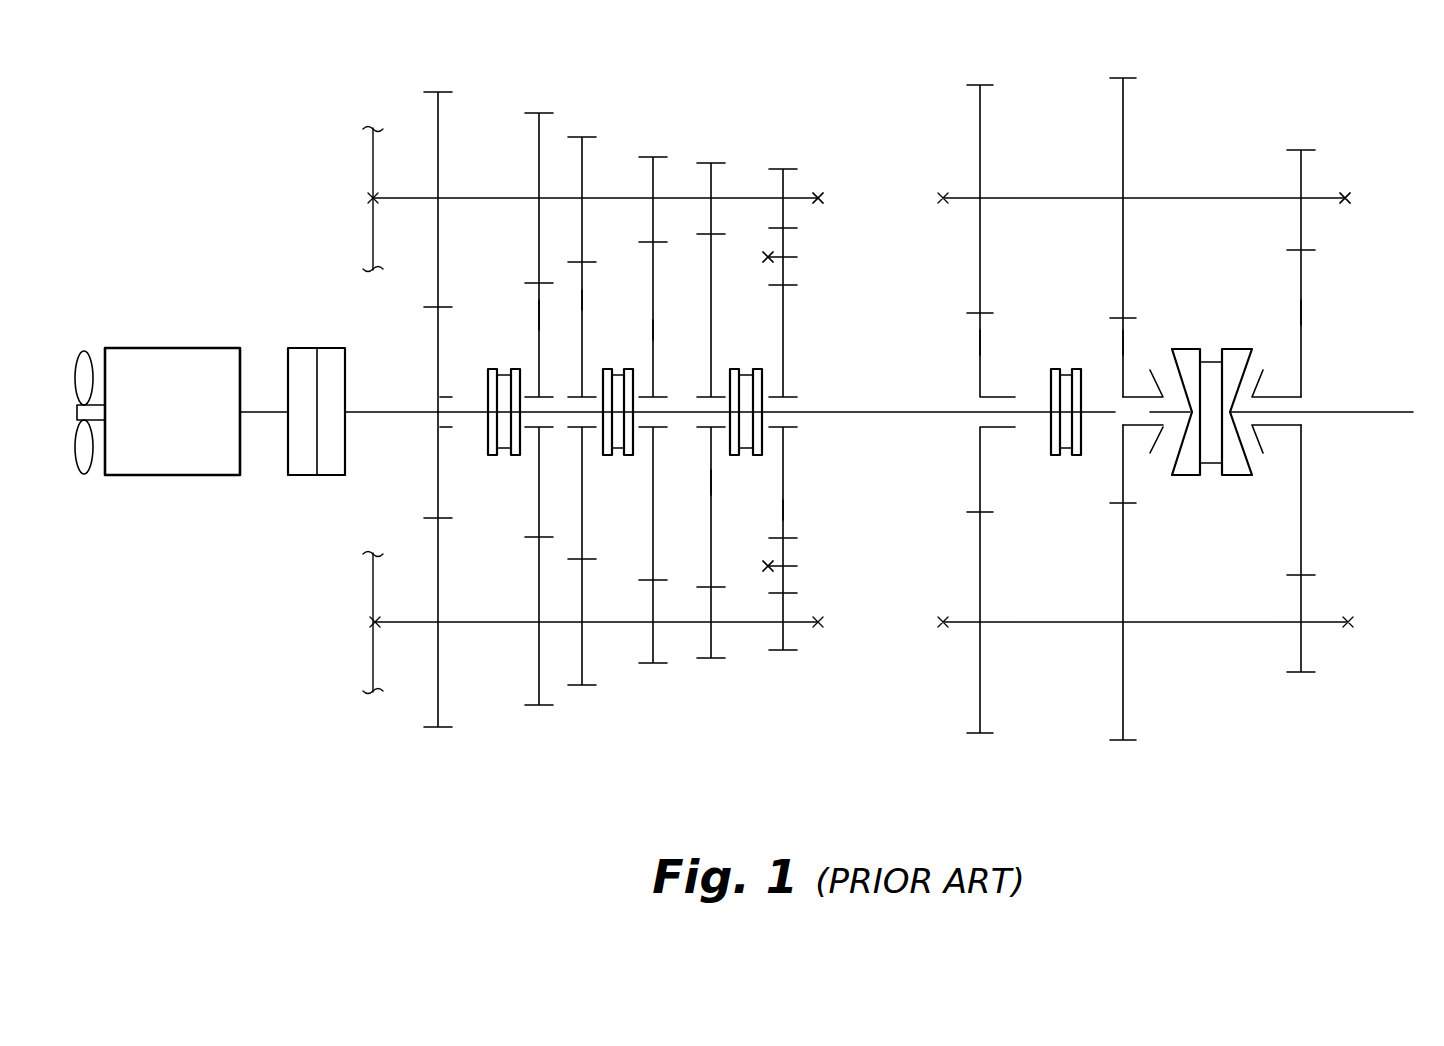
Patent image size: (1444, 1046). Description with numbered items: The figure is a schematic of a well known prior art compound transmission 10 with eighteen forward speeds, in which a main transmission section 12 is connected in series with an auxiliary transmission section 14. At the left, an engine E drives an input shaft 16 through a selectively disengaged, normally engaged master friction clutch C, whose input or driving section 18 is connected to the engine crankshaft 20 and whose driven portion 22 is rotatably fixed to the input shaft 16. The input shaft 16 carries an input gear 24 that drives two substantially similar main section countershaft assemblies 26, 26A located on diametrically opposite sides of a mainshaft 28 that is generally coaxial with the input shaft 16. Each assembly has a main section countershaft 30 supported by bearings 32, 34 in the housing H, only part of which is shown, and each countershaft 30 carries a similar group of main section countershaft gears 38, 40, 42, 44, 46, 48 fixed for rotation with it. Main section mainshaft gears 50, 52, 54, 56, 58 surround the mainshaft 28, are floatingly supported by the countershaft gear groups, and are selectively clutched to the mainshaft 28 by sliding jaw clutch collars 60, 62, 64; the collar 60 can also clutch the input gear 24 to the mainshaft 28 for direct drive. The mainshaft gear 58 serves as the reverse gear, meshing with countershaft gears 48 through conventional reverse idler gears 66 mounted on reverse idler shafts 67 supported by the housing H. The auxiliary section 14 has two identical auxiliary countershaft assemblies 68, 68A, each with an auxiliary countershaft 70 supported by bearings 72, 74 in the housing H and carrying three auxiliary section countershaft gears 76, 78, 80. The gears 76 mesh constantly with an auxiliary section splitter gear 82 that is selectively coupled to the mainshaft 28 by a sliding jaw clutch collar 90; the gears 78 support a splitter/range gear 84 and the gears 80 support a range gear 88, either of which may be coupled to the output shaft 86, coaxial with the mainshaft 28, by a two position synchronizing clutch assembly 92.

The compound transmission 10 is at (403, 780).
The main transmission section 12 is at (669, 127).
The auxiliary transmission section 14 is at (1062, 100).
The input shaft 16 is at (393, 405).
The input or driving section 18 is at (296, 472).
The engine crankshaft 20 is at (267, 405).
The driven portion 22 is at (331, 472).
The input gear 24 is at (437, 486).
The main section countershaft assembly 26 is at (746, 171).
The main section countershaft assembly 26A is at (488, 607).
The mainshaft 28 is at (848, 405).
The main section countershaft 30 is at (516, 201).
The bearing 32 is at (373, 198).
The bearing 34 is at (819, 193).
The main section countershaft gear 38 is at (437, 105).
The main section countershaft gear 40 is at (538, 157).
The main section countershaft gear 42 is at (583, 170).
The main section countershaft gear 44 is at (653, 203).
The main section countershaft gear 46 is at (710, 215).
The main section countershaft gear 48 is at (784, 188).
The main section mainshaft gear 50 is at (538, 318).
The main section mainshaft gear 52 is at (583, 300).
The main section mainshaft gear 54 is at (653, 328).
The main section mainshaft gear 56 is at (712, 482).
The main section mainshaft gear 58 is at (782, 507).
The sliding jaw clutch collar 60 is at (491, 456).
The sliding jaw clutch collar 62 is at (605, 456).
The sliding jaw clutch collar 64 is at (762, 367).
The reverse idler gear 66 is at (785, 244).
The reverse idler shaft 67 is at (792, 568).
The auxiliary countershaft assembly 68 is at (1199, 185).
The auxiliary countershaft assembly 68A is at (1138, 634).
The auxiliary countershaft 70 is at (1057, 197).
The bearing 72 is at (943, 193).
The bearing 74 is at (1350, 196).
The auxiliary section countershaft gear 76 is at (982, 127).
The auxiliary section countershaft gear 78 is at (1123, 112).
The auxiliary section countershaft gear 80 is at (1300, 168).
The auxiliary section splitter gear 82 is at (980, 342).
The auxiliary section splitter/range gear 84 is at (1120, 342).
The output shaft 86 is at (1385, 403).
The auxiliary section range gear 88 is at (1302, 312).
The sliding jaw clutch collar 90 is at (1053, 456).
The synchronizing clutch assembly 92 is at (1183, 343).
The engine E is at (172, 411).
The master friction clutch C is at (312, 344).
The housing H is at (373, 148).